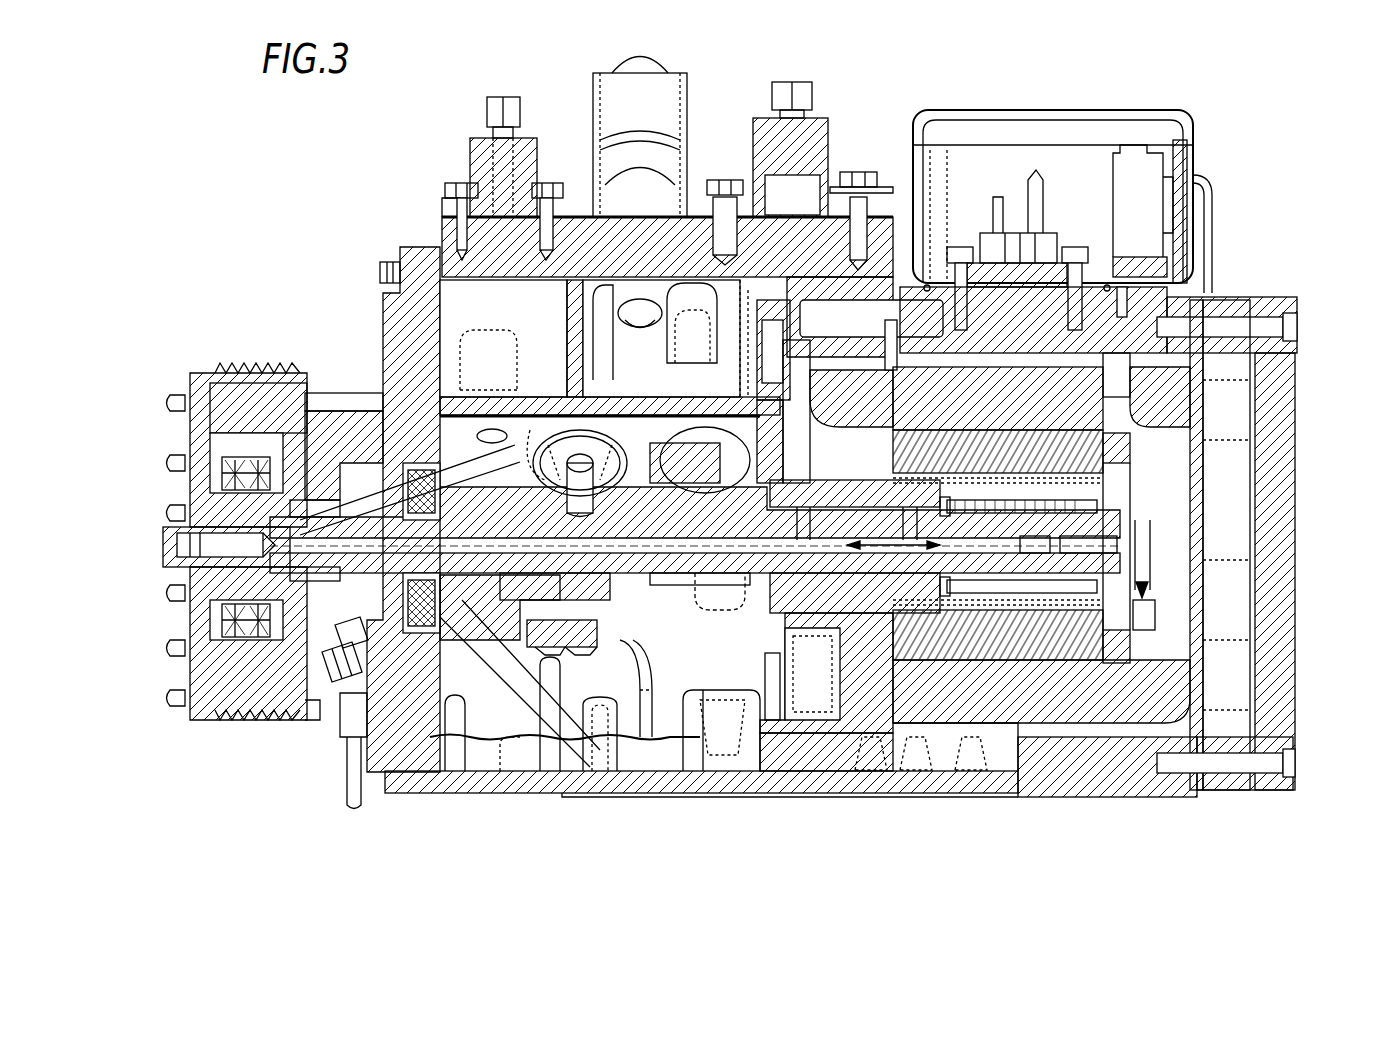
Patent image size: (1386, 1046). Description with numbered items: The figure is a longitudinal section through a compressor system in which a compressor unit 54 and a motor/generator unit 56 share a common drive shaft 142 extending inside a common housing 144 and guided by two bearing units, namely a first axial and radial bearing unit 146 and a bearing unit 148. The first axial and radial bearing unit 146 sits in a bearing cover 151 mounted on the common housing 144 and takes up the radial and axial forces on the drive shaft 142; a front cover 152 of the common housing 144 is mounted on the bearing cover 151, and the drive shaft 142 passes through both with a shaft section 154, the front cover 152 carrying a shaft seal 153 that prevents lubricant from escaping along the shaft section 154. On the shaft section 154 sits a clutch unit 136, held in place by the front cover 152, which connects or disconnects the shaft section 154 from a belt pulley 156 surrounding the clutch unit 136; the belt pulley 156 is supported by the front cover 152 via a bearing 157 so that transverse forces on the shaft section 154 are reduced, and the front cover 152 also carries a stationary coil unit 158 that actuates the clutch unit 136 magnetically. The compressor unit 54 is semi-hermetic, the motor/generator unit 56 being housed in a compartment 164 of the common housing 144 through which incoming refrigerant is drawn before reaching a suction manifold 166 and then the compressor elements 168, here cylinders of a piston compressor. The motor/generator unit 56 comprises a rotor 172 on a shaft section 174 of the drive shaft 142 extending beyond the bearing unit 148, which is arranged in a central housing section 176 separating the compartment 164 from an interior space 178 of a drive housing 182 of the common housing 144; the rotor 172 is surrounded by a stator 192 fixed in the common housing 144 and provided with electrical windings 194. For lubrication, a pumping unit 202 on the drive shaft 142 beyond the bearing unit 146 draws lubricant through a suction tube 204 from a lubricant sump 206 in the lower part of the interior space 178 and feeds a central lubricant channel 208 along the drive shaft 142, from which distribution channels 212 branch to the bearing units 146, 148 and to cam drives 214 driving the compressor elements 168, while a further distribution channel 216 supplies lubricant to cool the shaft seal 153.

The compressor unit 54 is at (612, 240).
The motor/generator unit 56 is at (988, 420).
The clutch unit 136 is at (248, 662).
The common drive shaft 142 is at (677, 510).
The common housing 144 is at (703, 790).
The first axial and radial bearing unit 146 is at (472, 597).
The bearing unit 148 is at (860, 595).
The bearing cover 151 is at (410, 388).
The front cover 152 is at (355, 440).
The shaft seal 153 is at (308, 578).
The shaft section 154 is at (280, 555).
The belt pulley 156 is at (262, 358).
The bearing 157 is at (245, 402).
The stationary coil unit 158 is at (245, 460).
The compartment 164 is at (1143, 470).
The suction manifold 166 is at (648, 290).
The compressor elements 168 is at (545, 430).
The rotor 172 is at (1080, 634).
The shaft section 174 is at (1082, 528).
The central housing section 176 is at (780, 733).
The interior space 178 is at (627, 678).
The drive housing 182 is at (608, 790).
The stator 192 is at (1055, 705).
The electrical windings 194 is at (1175, 694).
The pumping unit 202 is at (390, 617).
The suction tube 204 is at (527, 680).
The lubricant sump 206 is at (478, 750).
The central lubricant channel 208 is at (762, 545).
The distribution channels 212 is at (468, 437).
The cam drives 214 is at (630, 507).
The further distribution channel 216 is at (283, 720).